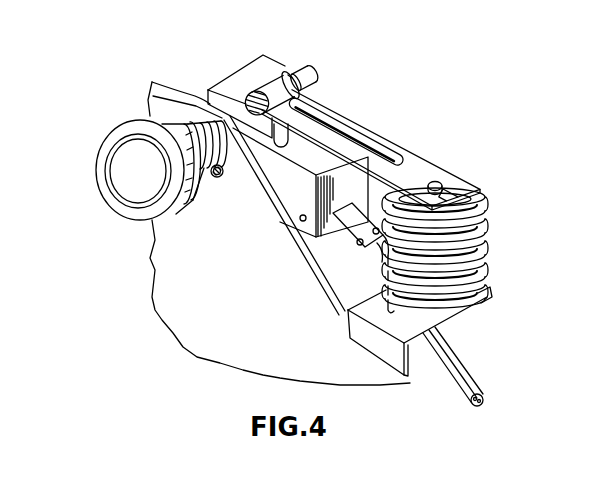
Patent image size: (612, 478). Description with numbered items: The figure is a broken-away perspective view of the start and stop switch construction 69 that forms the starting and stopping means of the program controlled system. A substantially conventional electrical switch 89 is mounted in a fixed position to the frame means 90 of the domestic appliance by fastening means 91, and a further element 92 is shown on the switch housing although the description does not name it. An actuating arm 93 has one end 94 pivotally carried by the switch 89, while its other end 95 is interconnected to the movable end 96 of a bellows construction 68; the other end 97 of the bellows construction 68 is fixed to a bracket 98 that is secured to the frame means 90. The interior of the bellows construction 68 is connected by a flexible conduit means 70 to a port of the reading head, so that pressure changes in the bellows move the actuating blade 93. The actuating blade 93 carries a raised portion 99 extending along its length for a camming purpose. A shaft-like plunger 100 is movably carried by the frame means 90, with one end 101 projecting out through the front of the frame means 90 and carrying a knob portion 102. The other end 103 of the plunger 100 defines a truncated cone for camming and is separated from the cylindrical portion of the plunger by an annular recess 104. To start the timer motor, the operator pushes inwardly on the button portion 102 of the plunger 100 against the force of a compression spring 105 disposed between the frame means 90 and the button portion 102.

The bellows construction 68 is at (483, 227).
The start and stop switch construction 69 is at (420, 62).
The flexible conduit means 70 is at (470, 374).
The electrical switch 89 is at (290, 208).
The frame means 90 is at (324, 270).
The fastening means 91 is at (223, 178).
The housing front face 92 is at (272, 148).
The actuating arm 93 is at (393, 152).
The one end of the actuating arm 94 is at (265, 62).
The other end of the actuating blade 95 is at (463, 188).
The movable end of the bellows construction 96 is at (481, 198).
The other end of the bellows construction 97 is at (487, 300).
The bracket 98 is at (413, 330).
The raised portion 99 is at (322, 115).
The plunger 100 is at (258, 72).
The one end of the plunger 101 is at (199, 186).
The knob portion 102 is at (124, 178).
The other end of the plunger 103 is at (317, 72).
The annular recess 104 is at (291, 72).
The compression spring 105 is at (158, 104).